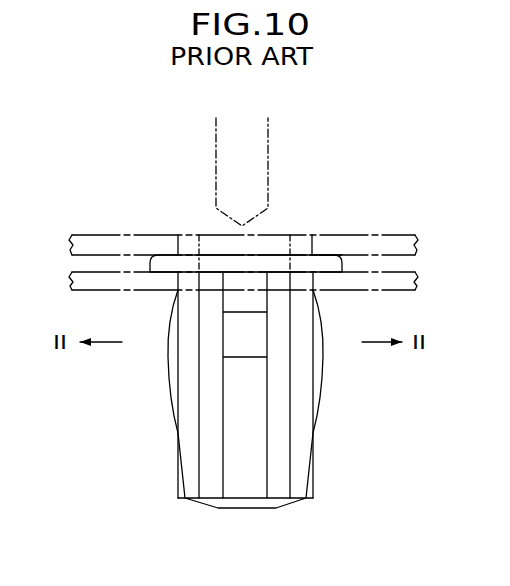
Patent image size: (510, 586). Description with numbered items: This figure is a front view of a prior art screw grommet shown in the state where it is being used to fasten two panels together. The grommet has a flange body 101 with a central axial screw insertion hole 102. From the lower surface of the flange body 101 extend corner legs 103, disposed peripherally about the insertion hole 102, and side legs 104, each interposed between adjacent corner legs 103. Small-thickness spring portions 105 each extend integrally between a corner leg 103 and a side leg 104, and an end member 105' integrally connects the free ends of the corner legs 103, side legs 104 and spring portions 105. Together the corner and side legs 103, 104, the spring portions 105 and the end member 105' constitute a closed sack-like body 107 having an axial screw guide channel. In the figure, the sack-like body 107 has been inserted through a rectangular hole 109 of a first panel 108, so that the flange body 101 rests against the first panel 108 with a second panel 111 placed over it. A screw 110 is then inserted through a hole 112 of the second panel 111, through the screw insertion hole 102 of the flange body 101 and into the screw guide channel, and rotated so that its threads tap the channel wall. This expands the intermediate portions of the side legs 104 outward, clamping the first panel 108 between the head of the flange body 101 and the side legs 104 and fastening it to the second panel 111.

The flange body 101 is at (322, 252).
The screw insertion hole 102 is at (278, 263).
The corner legs 103 is at (187, 433).
The side legs 104 is at (168, 358).
The small-thickness spring portions 105 is at (254, 385).
The end member 105' is at (245, 525).
The sack-like body 107 is at (320, 340).
The first panel 108 is at (403, 279).
The rectangular hole 109 is at (183, 280).
The screw 110 is at (260, 164).
The second panel 111 is at (400, 242).
The hole 112 is at (203, 237).